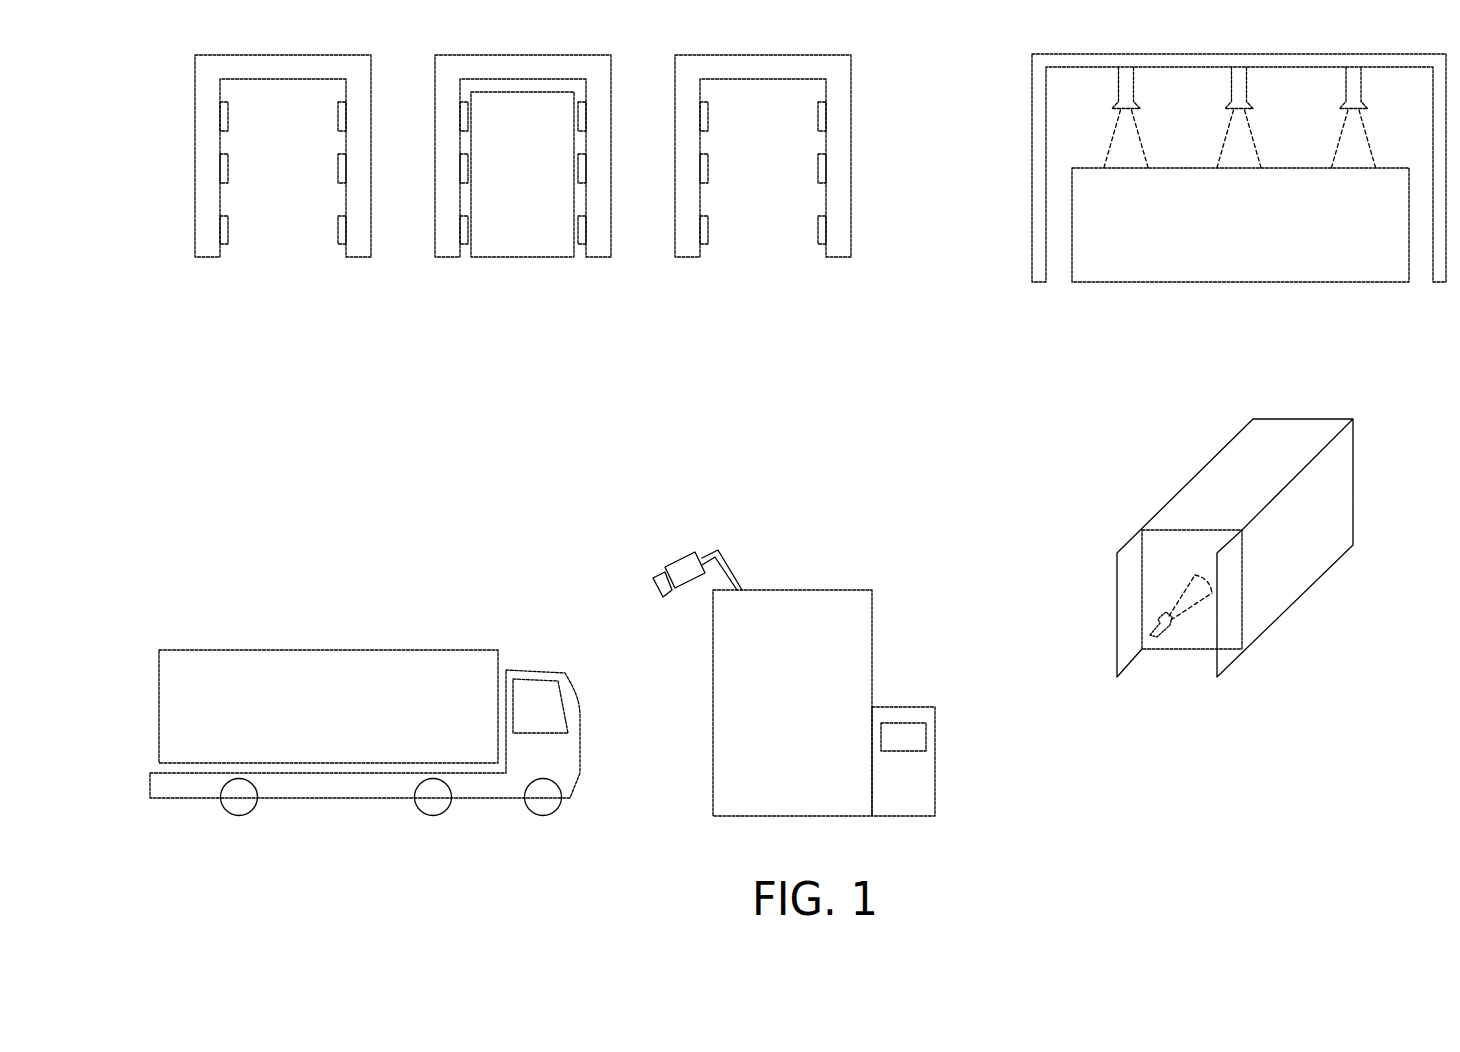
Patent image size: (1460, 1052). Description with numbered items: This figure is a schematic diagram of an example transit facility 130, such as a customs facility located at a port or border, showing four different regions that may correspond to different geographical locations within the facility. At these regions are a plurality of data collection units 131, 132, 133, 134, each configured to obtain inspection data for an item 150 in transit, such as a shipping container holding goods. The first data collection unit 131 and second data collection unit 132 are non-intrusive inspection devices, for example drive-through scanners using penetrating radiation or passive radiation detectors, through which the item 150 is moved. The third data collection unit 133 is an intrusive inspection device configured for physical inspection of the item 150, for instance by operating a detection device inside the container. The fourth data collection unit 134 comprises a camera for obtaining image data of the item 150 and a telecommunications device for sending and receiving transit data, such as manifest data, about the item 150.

The transit facility 130 is at (200, 21).
The first data collection unit 131 is at (294, 310).
The second data collection unit 132 is at (1012, 298).
The third data collection unit 133 is at (1362, 630).
The fourth data collection unit 134 is at (886, 536).
The item 150 is at (535, 257).